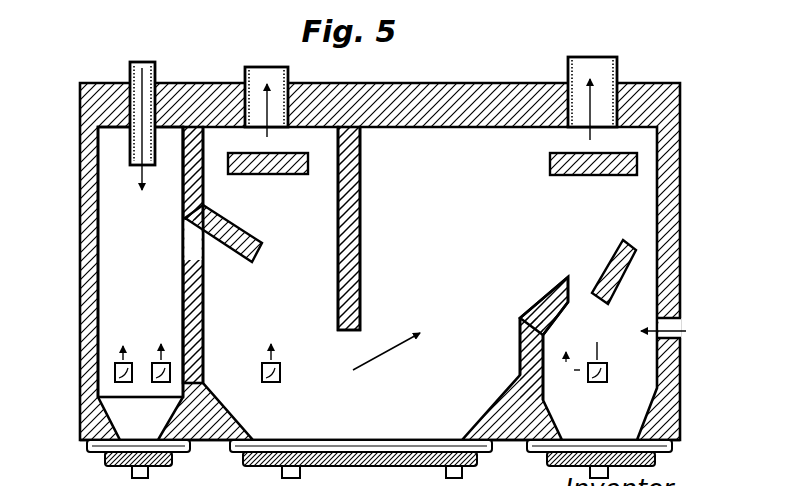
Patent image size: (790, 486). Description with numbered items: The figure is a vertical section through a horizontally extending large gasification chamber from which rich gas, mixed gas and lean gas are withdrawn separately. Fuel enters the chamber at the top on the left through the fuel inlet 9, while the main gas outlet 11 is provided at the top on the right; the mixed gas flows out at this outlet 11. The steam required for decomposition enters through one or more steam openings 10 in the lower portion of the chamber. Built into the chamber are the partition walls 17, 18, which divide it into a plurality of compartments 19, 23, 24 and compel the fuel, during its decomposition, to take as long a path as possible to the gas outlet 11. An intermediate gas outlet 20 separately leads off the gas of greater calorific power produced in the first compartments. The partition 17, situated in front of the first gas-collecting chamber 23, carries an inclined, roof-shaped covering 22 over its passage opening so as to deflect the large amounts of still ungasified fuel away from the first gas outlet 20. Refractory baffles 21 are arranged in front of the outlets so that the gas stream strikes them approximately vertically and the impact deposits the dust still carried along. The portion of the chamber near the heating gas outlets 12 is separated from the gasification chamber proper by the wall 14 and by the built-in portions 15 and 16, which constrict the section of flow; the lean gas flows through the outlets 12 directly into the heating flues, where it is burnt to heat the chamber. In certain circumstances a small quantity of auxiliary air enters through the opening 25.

The fuel inlet 9 is at (142, 115).
The steam openings 10 is at (205, 348).
The main gas outlet 11 is at (592, 60).
The heating gas outlets 12 is at (590, 376).
The wall 14 is at (530, 356).
The built-in portion 15 is at (538, 312).
The built-in portion 16 is at (609, 274).
The partition wall 17 is at (195, 162).
The partition wall 18 is at (366, 189).
The compartment 19 is at (140, 262).
The intermediate gas outlet 20 is at (266, 89).
The baffles 21 is at (272, 174).
The roof-shaped covering 22 is at (237, 239).
The first gas-collecting chamber 23 is at (270, 255).
The compartment 24 is at (505, 257).
The auxiliary air opening 25 is at (678, 326).